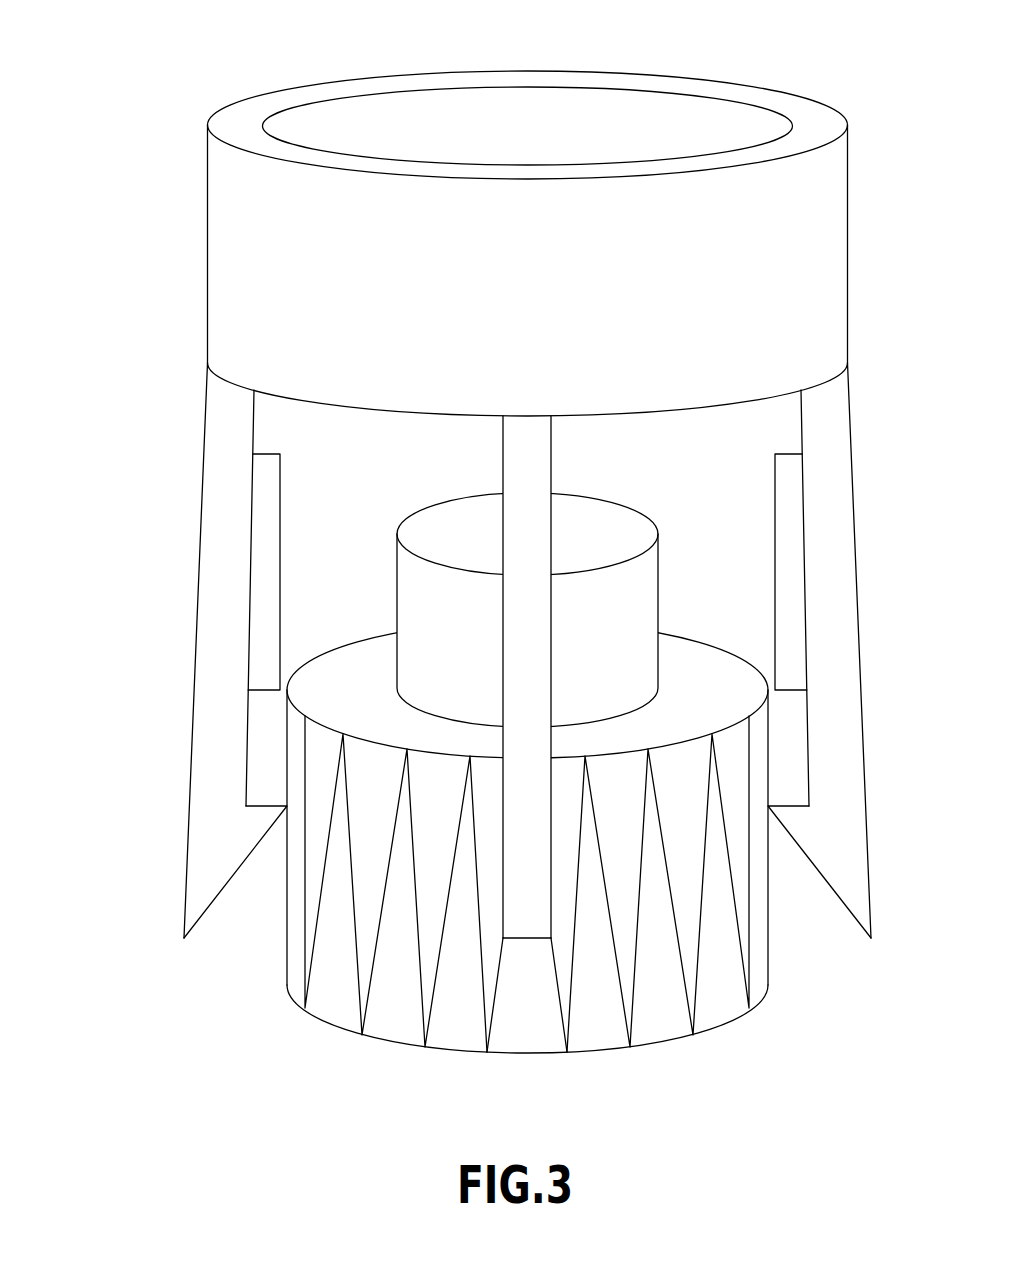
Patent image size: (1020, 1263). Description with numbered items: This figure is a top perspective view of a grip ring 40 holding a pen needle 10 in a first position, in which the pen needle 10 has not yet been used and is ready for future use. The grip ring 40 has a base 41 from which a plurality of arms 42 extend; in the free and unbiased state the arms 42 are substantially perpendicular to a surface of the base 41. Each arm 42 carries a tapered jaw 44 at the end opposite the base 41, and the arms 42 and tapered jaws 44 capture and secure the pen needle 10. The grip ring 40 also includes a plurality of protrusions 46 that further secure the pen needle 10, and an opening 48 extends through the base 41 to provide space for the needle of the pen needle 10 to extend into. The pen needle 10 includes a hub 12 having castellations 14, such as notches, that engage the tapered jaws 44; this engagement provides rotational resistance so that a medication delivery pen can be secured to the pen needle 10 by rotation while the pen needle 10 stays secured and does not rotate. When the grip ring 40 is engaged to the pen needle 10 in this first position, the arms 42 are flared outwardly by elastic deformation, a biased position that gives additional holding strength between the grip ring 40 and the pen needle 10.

The pen needle 10 is at (658, 575).
The hub 12 is at (767, 942).
The castellations 14 is at (635, 967).
The grip ring 40 is at (173, 155).
The base 41 is at (732, 258).
The arms 42 is at (855, 475).
The tapered jaw 44 is at (228, 883).
The protrusion 46 is at (265, 515).
The opening 48 is at (603, 102).